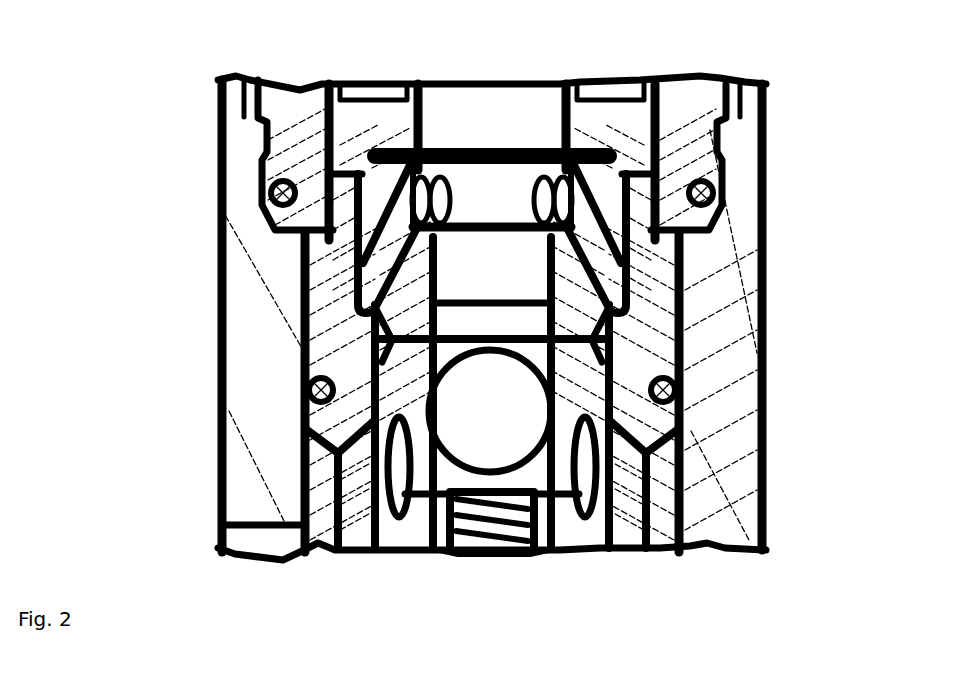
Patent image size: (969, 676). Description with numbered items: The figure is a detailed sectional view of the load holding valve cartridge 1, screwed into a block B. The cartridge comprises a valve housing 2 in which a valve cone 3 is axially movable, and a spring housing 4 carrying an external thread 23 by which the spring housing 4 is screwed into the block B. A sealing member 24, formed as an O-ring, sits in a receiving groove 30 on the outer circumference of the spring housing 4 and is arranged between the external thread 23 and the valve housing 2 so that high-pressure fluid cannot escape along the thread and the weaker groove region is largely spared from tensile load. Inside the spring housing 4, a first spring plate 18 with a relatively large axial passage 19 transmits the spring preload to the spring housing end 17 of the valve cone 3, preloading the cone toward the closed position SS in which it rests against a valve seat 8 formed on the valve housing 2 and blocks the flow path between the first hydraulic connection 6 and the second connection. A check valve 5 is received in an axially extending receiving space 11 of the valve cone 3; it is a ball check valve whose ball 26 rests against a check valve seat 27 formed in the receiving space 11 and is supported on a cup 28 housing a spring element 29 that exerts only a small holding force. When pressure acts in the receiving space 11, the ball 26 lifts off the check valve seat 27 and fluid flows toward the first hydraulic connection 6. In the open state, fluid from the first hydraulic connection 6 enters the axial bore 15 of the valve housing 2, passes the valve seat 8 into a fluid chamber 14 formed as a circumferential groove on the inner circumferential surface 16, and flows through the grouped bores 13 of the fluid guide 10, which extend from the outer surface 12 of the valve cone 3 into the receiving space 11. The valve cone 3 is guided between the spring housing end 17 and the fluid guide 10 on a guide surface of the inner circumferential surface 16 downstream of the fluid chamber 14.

The load holding valve cartridge 1 is at (156, 154).
The valve housing 2 is at (663, 330).
The valve cone 3 is at (603, 186).
The spring housing 4 is at (693, 95).
The check valve 5 is at (553, 441).
The first hydraulic connection 6 is at (360, 486).
The valve seat 8 is at (603, 313).
The fluid guide 10 is at (459, 180).
The receiving space 11 is at (380, 318).
The outer surface 12 is at (380, 252).
The bores 13 is at (457, 290).
The fluid chamber 14 is at (623, 284).
The axial bore 15 is at (386, 510).
The inner circumferential surface 16 is at (423, 400).
The spring housing end 17 is at (443, 140).
The first spring plate 18 is at (373, 120).
The axial passage 19 is at (513, 118).
The external thread 23 is at (240, 97).
The sealing member 24 is at (264, 198).
The ball 26 is at (682, 400).
The check valve seat 27 is at (372, 368).
The cup 28 is at (452, 545).
The spring element 29 is at (513, 553).
The receiving groove 30 is at (718, 210).
The block B is at (710, 510).
The closed position SS is at (925, 245).